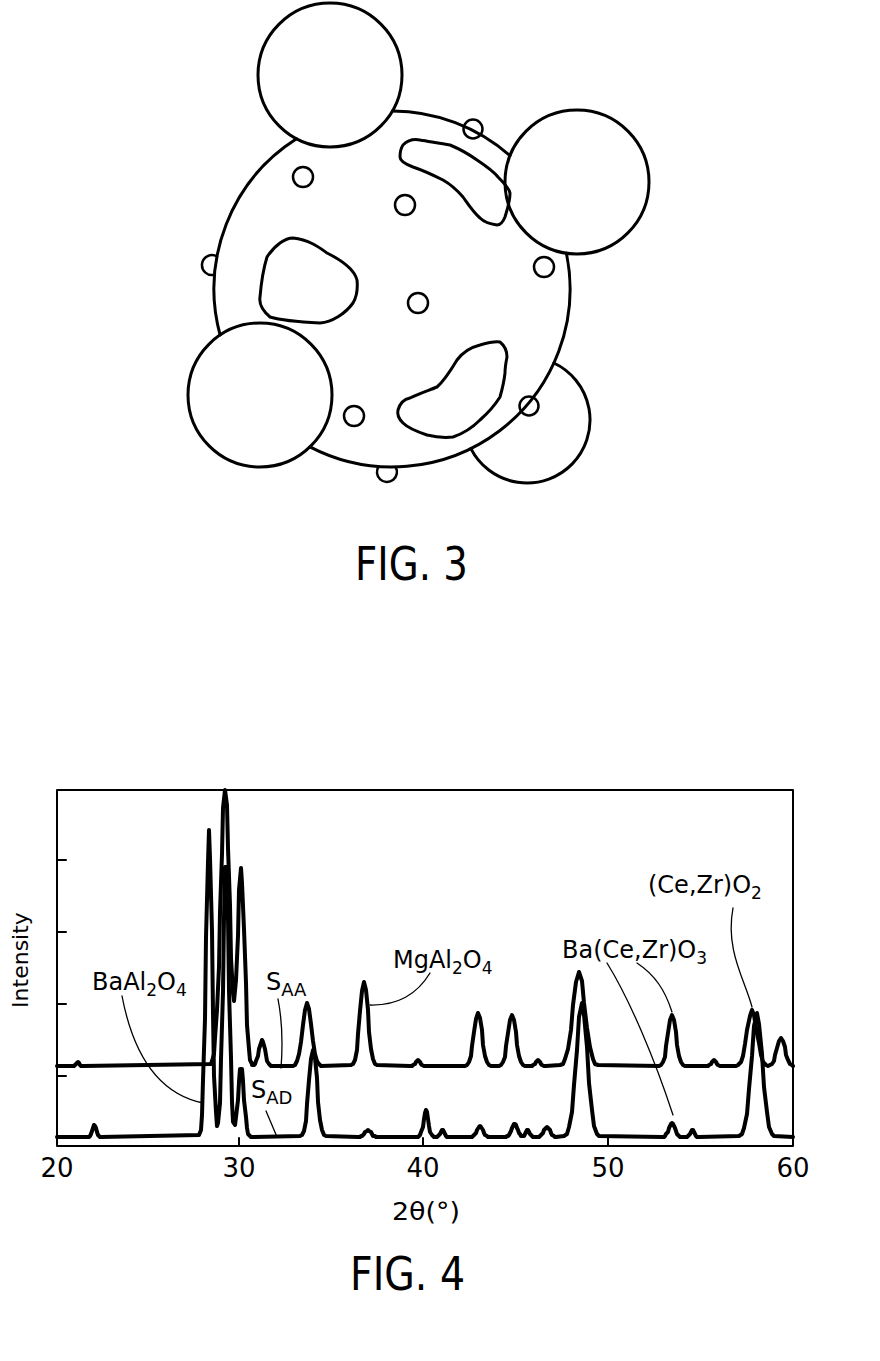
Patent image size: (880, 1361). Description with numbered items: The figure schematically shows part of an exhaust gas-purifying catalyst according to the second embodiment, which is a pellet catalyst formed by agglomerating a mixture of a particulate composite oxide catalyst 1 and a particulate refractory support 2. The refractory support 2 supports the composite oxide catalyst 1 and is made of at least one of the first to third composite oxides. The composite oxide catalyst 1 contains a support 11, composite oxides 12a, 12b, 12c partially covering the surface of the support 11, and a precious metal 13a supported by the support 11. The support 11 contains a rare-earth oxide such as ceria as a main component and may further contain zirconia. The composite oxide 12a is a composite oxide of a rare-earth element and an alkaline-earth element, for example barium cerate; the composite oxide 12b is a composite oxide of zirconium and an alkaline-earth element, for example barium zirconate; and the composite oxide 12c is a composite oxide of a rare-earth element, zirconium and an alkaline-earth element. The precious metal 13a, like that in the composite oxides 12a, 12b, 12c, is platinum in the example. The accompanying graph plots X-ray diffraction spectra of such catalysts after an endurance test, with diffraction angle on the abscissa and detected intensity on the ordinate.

The composite oxide catalyst 1 is at (502, 125).
The refractory support 2 is at (595, 125).
The support 11 is at (550, 321).
The composite oxide 12a is at (296, 248).
The composite oxide 12b is at (422, 150).
The composite oxide 12c is at (455, 420).
The precious metal 13a is at (352, 427).